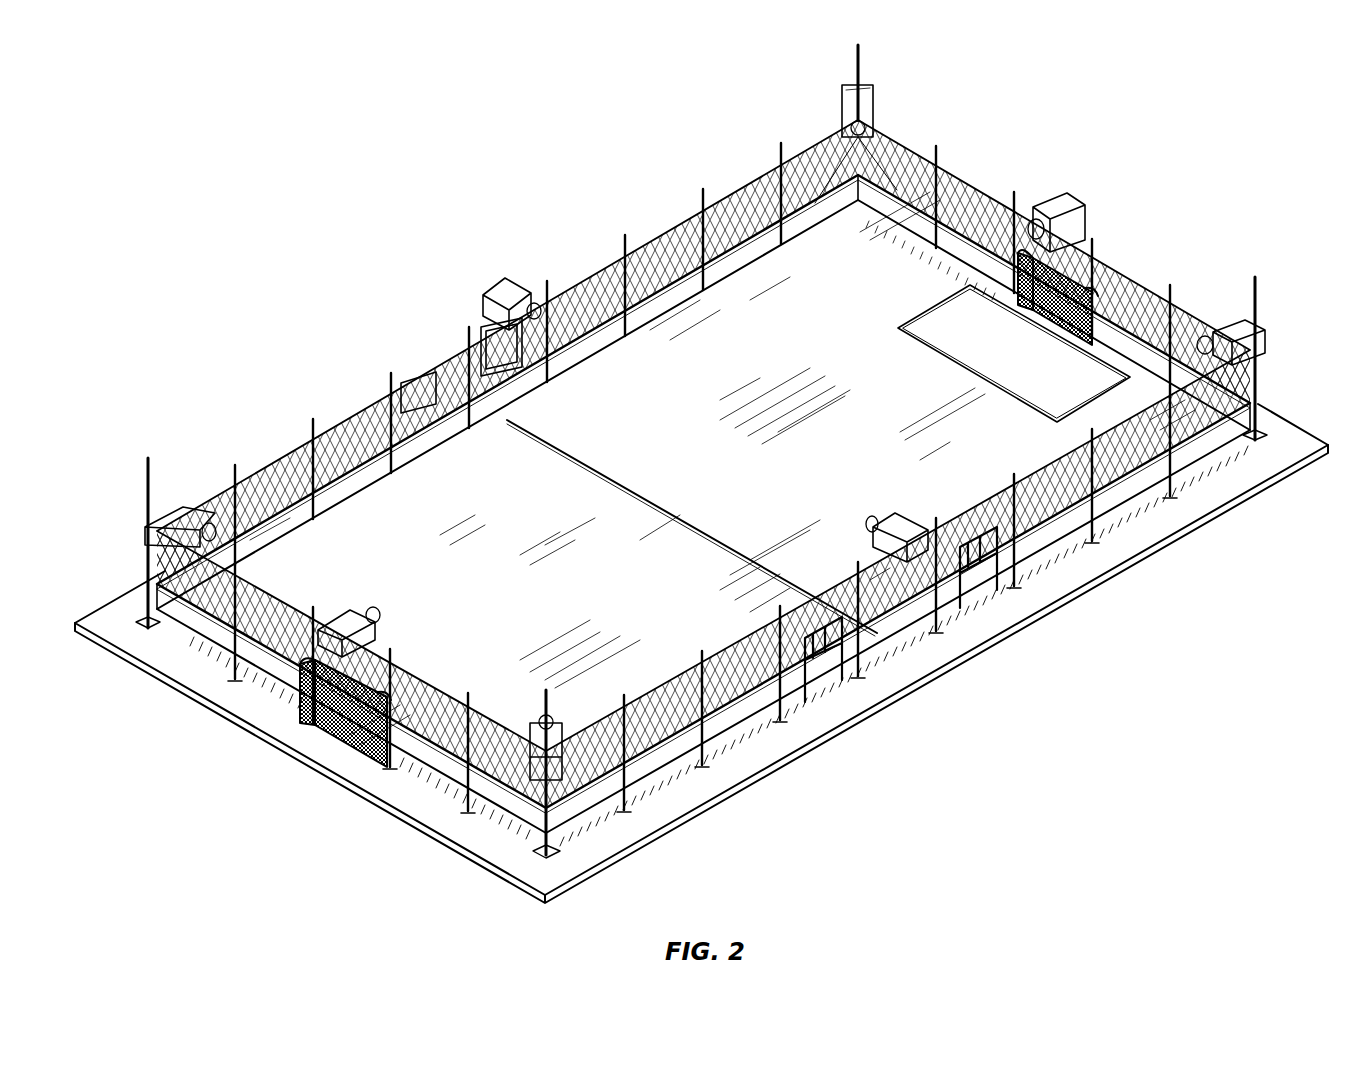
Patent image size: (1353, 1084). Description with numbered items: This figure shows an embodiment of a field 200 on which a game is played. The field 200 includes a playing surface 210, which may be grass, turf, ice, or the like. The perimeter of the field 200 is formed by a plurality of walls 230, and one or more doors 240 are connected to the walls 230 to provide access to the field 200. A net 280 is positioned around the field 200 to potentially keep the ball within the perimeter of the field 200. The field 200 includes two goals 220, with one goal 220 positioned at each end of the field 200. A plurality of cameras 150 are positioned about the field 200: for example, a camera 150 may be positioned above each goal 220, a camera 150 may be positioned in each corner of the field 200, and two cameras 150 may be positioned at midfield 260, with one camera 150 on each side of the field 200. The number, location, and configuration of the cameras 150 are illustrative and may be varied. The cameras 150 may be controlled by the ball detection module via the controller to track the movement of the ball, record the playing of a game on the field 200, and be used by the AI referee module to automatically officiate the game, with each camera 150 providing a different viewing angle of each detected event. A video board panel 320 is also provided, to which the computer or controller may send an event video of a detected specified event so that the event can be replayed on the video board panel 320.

The camera 150 is at (876, 106).
The field 200 is at (290, 132).
The playing surface 210 is at (491, 612).
The goal 220 is at (327, 721).
The wall 230 is at (922, 247).
The door 240 is at (978, 590).
The midfield 260 is at (586, 450).
The net 280 is at (722, 194).
The video board panel 320 is at (486, 336).